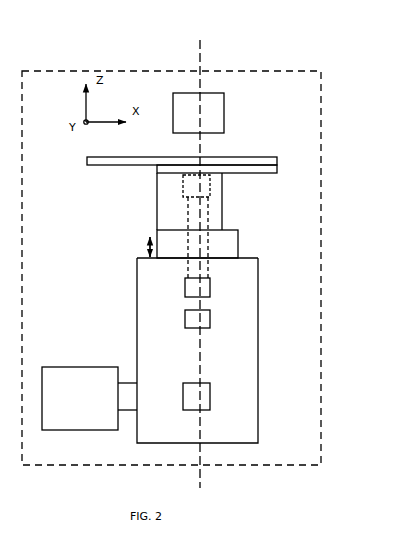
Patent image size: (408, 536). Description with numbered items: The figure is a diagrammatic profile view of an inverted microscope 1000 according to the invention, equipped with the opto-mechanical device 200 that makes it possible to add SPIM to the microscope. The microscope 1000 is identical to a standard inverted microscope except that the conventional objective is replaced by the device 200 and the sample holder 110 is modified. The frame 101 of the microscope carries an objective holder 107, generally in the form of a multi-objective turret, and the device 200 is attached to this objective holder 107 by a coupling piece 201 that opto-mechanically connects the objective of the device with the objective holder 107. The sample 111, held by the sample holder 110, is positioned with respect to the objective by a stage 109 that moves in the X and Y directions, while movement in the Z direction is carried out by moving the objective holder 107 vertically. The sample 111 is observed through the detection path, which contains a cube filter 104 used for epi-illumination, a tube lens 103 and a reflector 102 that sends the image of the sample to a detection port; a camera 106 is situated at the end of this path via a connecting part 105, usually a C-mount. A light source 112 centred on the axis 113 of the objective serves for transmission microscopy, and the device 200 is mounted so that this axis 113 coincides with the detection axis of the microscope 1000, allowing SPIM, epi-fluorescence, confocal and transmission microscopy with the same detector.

The microscope 1000 is at (61, 69).
The axis 113 is at (198, 49).
The light source 112 is at (226, 111).
The sample 111 is at (186, 173).
The sample holder 110 is at (240, 171).
The stage 109 is at (85, 163).
The device 200 is at (155, 228).
The coupling piece 201 is at (224, 233).
The objective holder 107 is at (244, 252).
The cube filter 104 is at (212, 292).
The tube lens 103 is at (212, 325).
The reflector 102 is at (212, 402).
The camera 106 is at (69, 362).
The connecting part 105 is at (134, 419).
The frame 101 is at (260, 445).